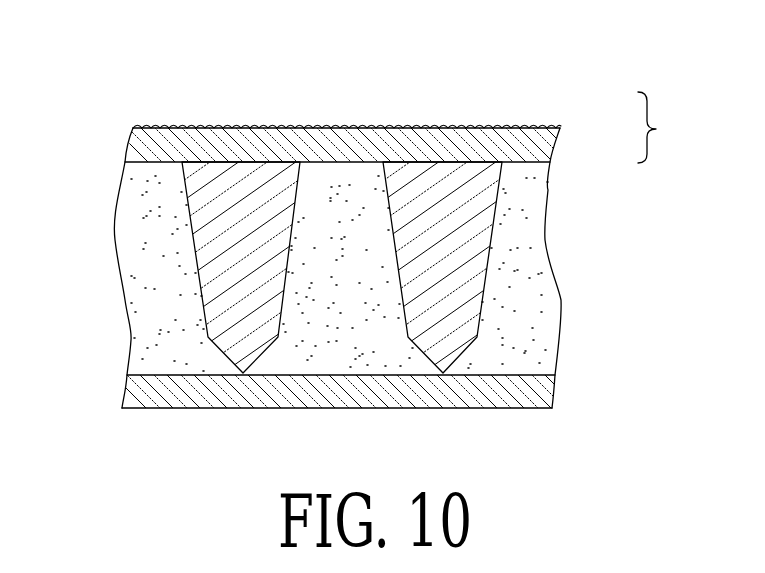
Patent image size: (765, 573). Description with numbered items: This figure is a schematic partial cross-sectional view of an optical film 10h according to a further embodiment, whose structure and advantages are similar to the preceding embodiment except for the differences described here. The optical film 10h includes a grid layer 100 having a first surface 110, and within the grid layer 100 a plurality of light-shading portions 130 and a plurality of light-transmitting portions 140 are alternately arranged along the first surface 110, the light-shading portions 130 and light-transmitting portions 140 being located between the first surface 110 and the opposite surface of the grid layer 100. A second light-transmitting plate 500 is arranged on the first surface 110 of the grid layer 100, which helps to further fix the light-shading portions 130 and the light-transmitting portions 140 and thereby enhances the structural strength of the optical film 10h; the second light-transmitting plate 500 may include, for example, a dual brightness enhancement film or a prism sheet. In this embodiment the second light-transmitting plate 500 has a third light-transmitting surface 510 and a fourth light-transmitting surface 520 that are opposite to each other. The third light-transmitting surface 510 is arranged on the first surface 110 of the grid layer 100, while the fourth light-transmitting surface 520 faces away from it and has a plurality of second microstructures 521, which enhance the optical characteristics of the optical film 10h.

The optical film 10h is at (85, 40).
The grid layer 100 is at (143, 154).
The first surface 110 is at (525, 167).
The light-shading portions 130 is at (457, 223).
The light-transmitting portions 140 is at (514, 288).
The second light-transmitting plate 500 is at (669, 127).
The third light-transmitting surface 510 is at (545, 160).
The fourth light-transmitting surface 520 is at (550, 132).
The second microstructures 521 is at (405, 125).